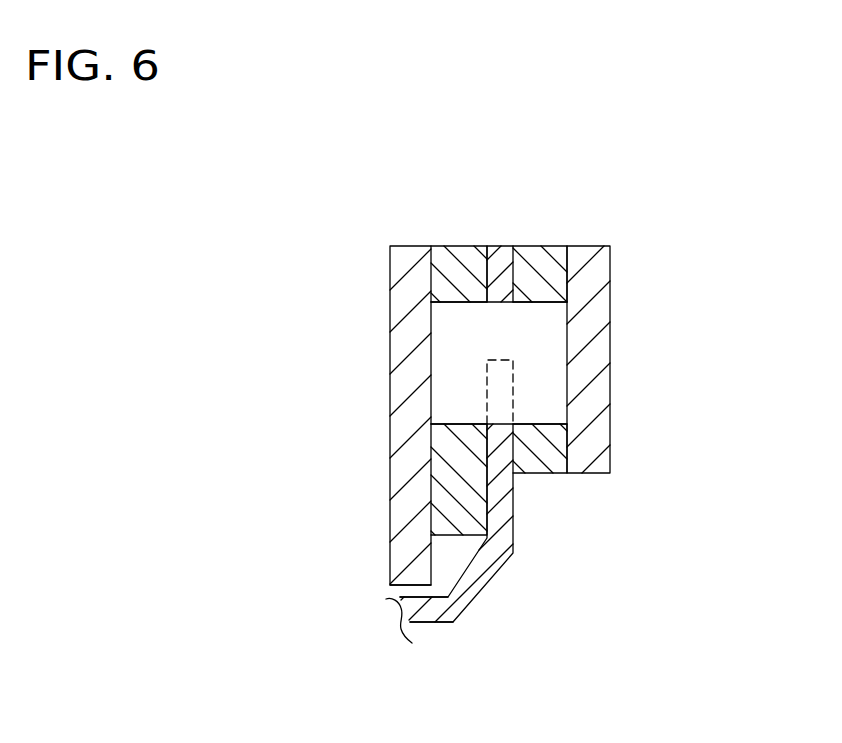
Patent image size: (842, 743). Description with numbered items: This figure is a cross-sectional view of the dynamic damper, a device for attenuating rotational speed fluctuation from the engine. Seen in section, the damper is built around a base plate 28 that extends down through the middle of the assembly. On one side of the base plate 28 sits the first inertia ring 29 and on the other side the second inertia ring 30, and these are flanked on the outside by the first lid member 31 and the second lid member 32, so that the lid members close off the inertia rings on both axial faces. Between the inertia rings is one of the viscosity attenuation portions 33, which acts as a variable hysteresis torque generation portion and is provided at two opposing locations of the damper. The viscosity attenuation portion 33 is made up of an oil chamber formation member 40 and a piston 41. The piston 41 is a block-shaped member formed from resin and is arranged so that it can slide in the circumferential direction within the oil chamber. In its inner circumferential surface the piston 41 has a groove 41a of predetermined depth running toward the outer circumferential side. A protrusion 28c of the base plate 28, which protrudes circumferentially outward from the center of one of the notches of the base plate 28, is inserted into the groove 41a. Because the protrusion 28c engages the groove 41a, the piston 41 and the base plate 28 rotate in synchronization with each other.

The base plate 28 is at (470, 588).
The protrusion 28c is at (498, 407).
The first inertia ring 29 is at (458, 250).
The second inertia ring 30 is at (553, 252).
The first lid member 31 is at (398, 251).
The second lid member 32 is at (590, 323).
The viscosity attenuation portion 33 is at (406, 426).
The oil chamber formation member 40 is at (507, 255).
The piston 41 is at (553, 373).
The groove 41a is at (493, 363).